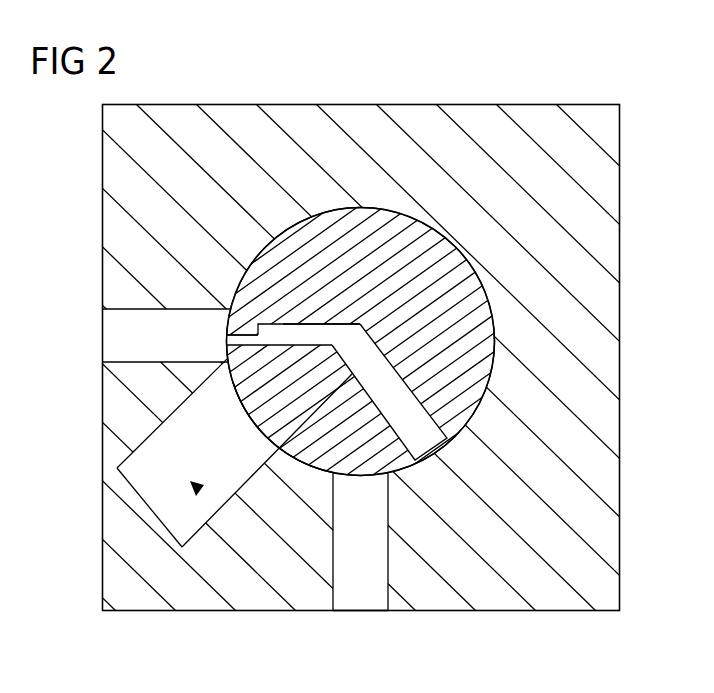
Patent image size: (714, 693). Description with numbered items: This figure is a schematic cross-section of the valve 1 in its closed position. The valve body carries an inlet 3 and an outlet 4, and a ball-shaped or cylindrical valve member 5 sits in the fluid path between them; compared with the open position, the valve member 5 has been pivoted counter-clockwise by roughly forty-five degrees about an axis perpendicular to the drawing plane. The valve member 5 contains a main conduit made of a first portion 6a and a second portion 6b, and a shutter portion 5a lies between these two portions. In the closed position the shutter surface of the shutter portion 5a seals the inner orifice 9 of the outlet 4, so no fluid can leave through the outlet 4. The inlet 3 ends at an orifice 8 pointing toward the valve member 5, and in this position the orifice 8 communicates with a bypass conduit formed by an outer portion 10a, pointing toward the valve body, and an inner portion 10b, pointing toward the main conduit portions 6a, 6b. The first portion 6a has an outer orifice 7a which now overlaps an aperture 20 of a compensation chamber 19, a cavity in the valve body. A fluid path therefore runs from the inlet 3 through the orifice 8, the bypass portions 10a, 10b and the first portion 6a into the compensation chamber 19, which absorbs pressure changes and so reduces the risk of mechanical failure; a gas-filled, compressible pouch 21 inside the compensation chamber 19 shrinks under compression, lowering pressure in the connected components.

The valve 1 is at (558, 84).
The inlet 3 is at (113, 323).
The outlet 4 is at (363, 588).
The valve member 5 is at (356, 247).
The shutter portion 5a is at (325, 440).
The first portion of the main conduit 6a is at (318, 350).
The second portion of the main conduit 6b is at (393, 396).
The orifice 7a is at (248, 413).
The orifice 8 is at (256, 339).
The inner orifice 9 is at (348, 613).
The outer portion of the bypass conduit 10a is at (236, 328).
The inner portion of the bypass conduit 10b is at (283, 330).
The compensation chamber 19 is at (170, 483).
The aperture 20 is at (266, 413).
The gas-filled, compressible pouch 21 is at (198, 489).